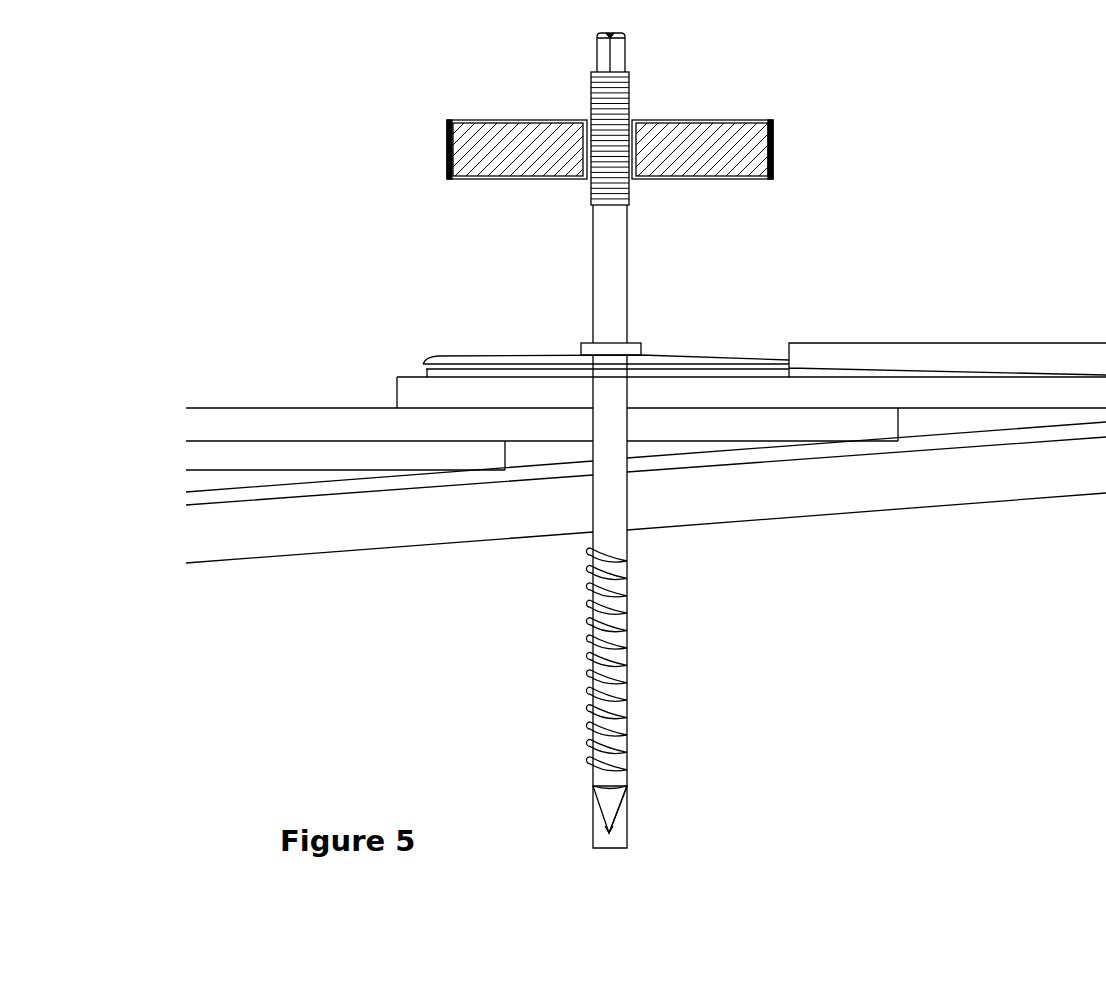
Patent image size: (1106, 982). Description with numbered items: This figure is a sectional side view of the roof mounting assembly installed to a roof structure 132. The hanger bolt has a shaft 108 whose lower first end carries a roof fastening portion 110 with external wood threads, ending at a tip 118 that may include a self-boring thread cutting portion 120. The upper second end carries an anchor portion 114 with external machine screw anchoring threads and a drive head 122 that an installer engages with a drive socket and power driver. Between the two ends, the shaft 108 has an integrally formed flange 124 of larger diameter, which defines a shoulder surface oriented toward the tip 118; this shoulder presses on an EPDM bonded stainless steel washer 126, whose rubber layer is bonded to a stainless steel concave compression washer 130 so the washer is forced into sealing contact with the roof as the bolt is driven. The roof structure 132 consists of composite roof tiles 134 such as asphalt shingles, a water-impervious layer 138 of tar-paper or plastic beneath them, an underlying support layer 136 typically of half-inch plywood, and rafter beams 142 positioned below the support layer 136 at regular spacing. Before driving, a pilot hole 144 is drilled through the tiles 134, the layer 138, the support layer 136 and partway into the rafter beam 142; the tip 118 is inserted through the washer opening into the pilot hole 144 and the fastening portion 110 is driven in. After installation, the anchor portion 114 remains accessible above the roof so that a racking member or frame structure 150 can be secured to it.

The shaft 108 is at (627, 545).
The roof fastening portion 110 is at (627, 642).
The anchor portion 114 is at (629, 113).
The tip 118 is at (607, 798).
The thread cutting portion 120 is at (616, 817).
The drive head 122 is at (625, 53).
The flange 124 is at (641, 344).
The EPDM bonded stainless steel washer 126 is at (506, 355).
The stainless steel concave compression washer 130 is at (707, 355).
The roof structure 132 is at (865, 328).
The composite roof tiles 134 is at (1053, 360).
The support layer 136 is at (345, 522).
The water-impervious layer 138 is at (262, 493).
The rafter beam 142 is at (434, 758).
The pilot hole 144 is at (617, 838).
The racking member or frame structure 150 is at (610, 149).